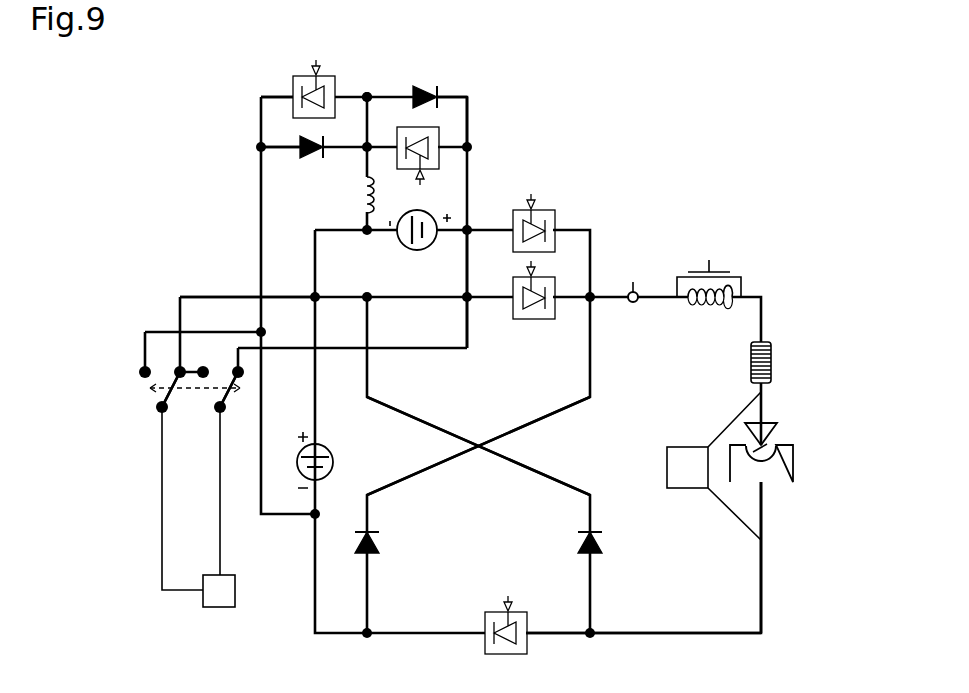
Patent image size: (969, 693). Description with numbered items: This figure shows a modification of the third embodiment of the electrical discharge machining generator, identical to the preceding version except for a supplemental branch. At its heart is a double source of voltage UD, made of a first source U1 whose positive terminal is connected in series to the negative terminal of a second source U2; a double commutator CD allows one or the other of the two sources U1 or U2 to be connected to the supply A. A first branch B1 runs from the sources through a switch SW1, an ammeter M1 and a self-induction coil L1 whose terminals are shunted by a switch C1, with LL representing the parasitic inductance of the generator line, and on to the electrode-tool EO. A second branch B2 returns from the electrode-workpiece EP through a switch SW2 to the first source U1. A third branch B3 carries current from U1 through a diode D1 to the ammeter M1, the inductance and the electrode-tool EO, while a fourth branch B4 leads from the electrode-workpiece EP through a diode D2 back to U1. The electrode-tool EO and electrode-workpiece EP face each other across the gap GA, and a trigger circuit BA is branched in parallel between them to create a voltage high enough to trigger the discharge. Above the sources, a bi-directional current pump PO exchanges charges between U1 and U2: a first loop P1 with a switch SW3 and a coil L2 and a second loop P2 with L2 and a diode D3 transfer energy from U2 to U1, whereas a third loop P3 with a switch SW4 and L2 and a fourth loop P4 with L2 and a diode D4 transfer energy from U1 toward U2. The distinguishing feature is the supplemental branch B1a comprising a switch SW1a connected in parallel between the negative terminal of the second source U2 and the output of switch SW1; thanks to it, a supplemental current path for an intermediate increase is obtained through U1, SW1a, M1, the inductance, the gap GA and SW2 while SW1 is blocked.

The third loop P3 is at (258, 103).
The second loop P2 is at (350, 142).
The switch SW4 is at (305, 75).
The bi-directional current pump PO is at (367, 84).
The diode D4 is at (415, 88).
The fourth loop P4 is at (458, 95).
The first loop P1 is at (455, 145).
The diode D3 is at (310, 160).
The switch SW3 is at (440, 192).
The self-induction coil L2 is at (360, 205).
The second source U2 is at (405, 250).
The switch SW1 is at (540, 208).
The switch SW1a is at (560, 290).
The first branch B1 is at (482, 302).
The supplemental branch B1a is at (478, 343).
The ammeter M1 is at (637, 285).
The switch C1 is at (712, 272).
The self-induction coil L1 is at (712, 305).
The parasitic inductance LL is at (772, 340).
The electrode-tool EO is at (764, 426).
The gap GA is at (772, 445).
The electrode-workpiece EP is at (792, 478).
The trigger circuit BA is at (714, 466).
The second branch B2 is at (697, 631).
The switch SW2 is at (518, 612).
The diode D1 is at (378, 545).
The diode D2 is at (600, 545).
The third branch B3 is at (430, 470).
The fourth branch B4 is at (552, 472).
The first source U1 is at (335, 455).
The double commutator CD is at (218, 413).
The supply A is at (219, 591).
The double source UD is at (296, 316).